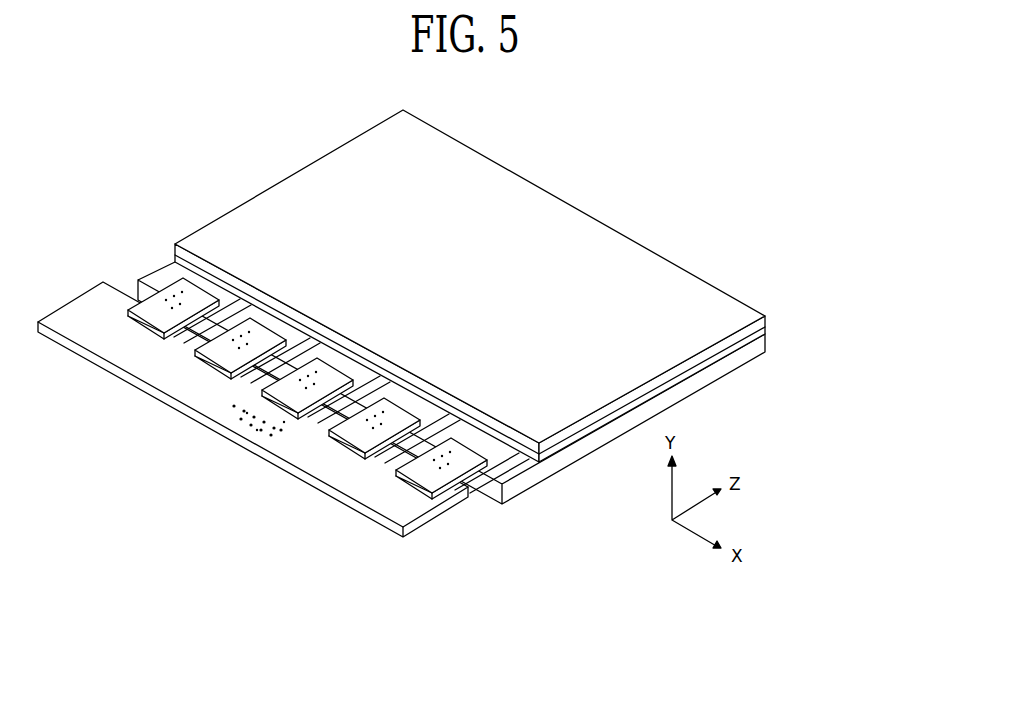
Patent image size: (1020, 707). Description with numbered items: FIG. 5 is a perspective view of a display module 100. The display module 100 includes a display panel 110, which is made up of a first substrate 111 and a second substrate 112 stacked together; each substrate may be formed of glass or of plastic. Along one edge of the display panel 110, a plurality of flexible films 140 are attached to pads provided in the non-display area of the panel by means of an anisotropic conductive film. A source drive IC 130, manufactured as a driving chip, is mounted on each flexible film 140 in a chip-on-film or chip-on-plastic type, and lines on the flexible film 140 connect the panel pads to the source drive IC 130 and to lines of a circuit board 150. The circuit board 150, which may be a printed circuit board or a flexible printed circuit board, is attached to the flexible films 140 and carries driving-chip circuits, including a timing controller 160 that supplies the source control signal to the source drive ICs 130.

The display module 100 is at (618, 188).
The display panel 110 is at (512, 346).
The first substrate 111 is at (767, 345).
The second substrate 112 is at (767, 325).
The source drive IC 130 is at (452, 484).
The flexible film 140 is at (424, 490).
The circuit board 150 is at (360, 490).
The timing controller 160 is at (262, 428).